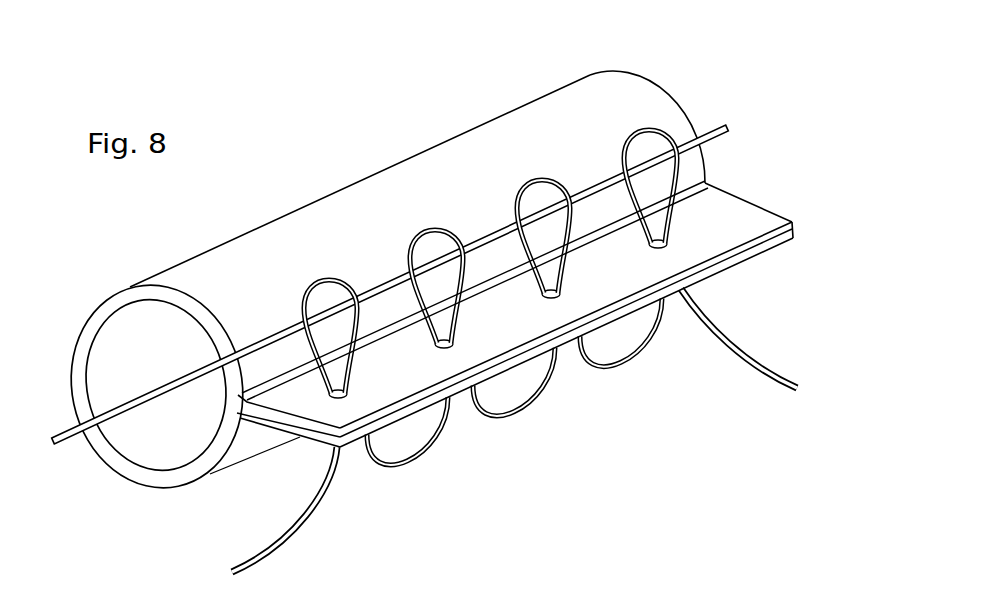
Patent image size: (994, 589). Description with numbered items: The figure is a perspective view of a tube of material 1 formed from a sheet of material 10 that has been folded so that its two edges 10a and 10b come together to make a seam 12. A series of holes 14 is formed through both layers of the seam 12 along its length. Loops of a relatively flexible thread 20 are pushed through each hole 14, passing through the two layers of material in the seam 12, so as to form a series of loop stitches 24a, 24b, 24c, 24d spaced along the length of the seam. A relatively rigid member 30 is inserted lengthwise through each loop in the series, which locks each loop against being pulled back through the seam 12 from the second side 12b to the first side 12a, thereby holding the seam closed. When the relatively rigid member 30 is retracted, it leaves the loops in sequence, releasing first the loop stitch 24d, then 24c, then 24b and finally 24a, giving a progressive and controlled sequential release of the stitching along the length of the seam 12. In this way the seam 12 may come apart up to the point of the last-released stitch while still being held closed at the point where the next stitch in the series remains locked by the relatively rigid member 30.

The tube of material 1 is at (342, 186).
The sheet of material 10 is at (607, 87).
The edge of the sheet 10a is at (780, 240).
The edge of the sheet 10b is at (793, 221).
The seam 12 is at (751, 195).
The first side of the seam 12a is at (735, 268).
The second side of the seam 12b is at (706, 219).
The holes 14 is at (352, 398).
The relatively flexible thread 20 is at (286, 528).
The loop stitch 24a is at (303, 292).
The loop stitch 24b is at (410, 240).
The loop stitch 24c is at (517, 191).
The loop stitch 24d is at (624, 143).
The relatively rigid member 30 is at (60, 446).